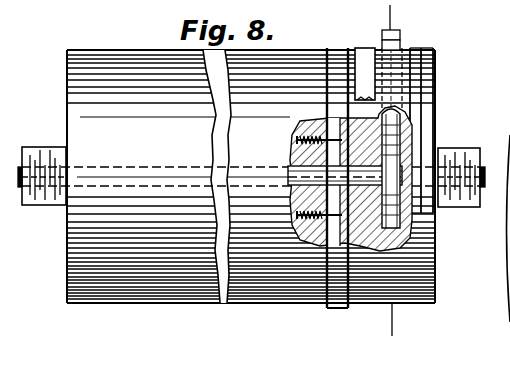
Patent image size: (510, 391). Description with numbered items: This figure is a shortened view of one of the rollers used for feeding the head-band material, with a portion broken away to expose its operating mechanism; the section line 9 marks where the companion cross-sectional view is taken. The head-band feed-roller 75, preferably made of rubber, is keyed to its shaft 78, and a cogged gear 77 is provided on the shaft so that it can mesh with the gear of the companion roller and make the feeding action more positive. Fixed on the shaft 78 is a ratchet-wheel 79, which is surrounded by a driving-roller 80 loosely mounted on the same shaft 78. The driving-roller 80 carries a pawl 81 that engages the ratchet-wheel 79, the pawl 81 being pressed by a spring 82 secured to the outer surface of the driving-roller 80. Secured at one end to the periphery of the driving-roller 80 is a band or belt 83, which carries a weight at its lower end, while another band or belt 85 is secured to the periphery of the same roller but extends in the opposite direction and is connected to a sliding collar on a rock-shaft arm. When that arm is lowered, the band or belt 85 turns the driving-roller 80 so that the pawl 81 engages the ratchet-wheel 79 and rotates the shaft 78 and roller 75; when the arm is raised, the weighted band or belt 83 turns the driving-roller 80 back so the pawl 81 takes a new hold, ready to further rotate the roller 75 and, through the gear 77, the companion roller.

The head-band feed-roller 75 is at (251, 176).
The cogged gear 77 is at (338, 62).
The shaft 78 is at (293, 162).
The ratchet-wheel 79 is at (405, 150).
The driving-roller 80 is at (432, 96).
The pawl 81 is at (402, 47).
The spring 82 is at (400, 35).
The band or belt 83 is at (445, 160).
The band or belt 85 is at (365, 62).
The section line 9- 9 is at (410, 14).